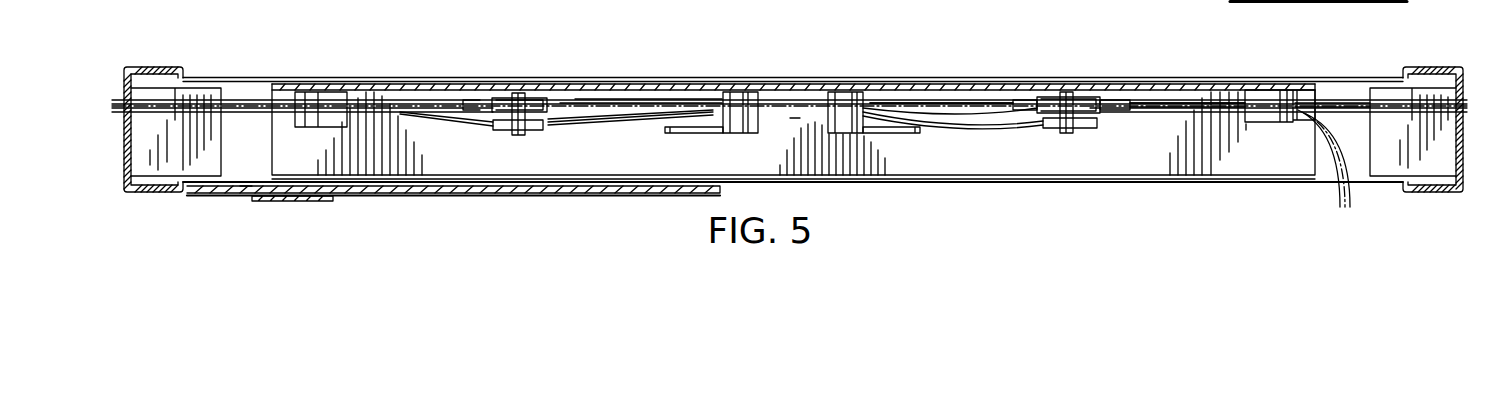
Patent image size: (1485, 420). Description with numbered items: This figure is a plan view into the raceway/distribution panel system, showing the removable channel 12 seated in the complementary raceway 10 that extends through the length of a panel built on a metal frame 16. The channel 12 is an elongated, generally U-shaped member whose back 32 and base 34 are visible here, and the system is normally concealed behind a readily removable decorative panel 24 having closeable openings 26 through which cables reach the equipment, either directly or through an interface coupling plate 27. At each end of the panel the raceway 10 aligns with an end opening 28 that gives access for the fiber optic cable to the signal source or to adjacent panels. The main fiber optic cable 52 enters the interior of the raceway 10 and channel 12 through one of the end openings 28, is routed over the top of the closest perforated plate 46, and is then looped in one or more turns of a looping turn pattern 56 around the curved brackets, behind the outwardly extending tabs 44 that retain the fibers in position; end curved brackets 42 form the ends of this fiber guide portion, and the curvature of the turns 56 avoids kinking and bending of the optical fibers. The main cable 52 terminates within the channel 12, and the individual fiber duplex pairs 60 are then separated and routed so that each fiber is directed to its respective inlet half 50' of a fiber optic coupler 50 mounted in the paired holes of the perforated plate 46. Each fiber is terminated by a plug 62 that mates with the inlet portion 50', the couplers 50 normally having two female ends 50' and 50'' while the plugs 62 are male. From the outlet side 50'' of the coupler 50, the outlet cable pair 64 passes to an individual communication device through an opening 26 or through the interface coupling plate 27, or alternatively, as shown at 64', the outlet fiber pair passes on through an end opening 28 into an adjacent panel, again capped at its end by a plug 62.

The raceway 10 is at (1148, 155).
The channel 12 is at (437, 64).
The metal frame 16 is at (170, 66).
The decorative panel 24 is at (465, 196).
The closeable opening 26 is at (250, 193).
The interface coupling plate 27 is at (295, 201).
The end opening 28 is at (135, 160).
The back 32 is at (650, 84).
The base 34 is at (605, 158).
The end curved bracket 42 is at (843, 92).
The tab 44 is at (700, 133).
The perforated plate 46 is at (520, 135).
The fiber optic coupler 50 is at (519, 81).
The inlet half 50' is at (1048, 159).
The outlet side 50'' is at (1083, 169).
The main fiber optic cable 52 is at (240, 100).
The looping turn pattern 56 is at (790, 118).
The individual fiber duplex pair 60 is at (925, 82).
The plug 62 is at (1018, 84).
The outlet cable pair 64 is at (1187, 71).
The outlet fiber pair 64' is at (1314, 168).